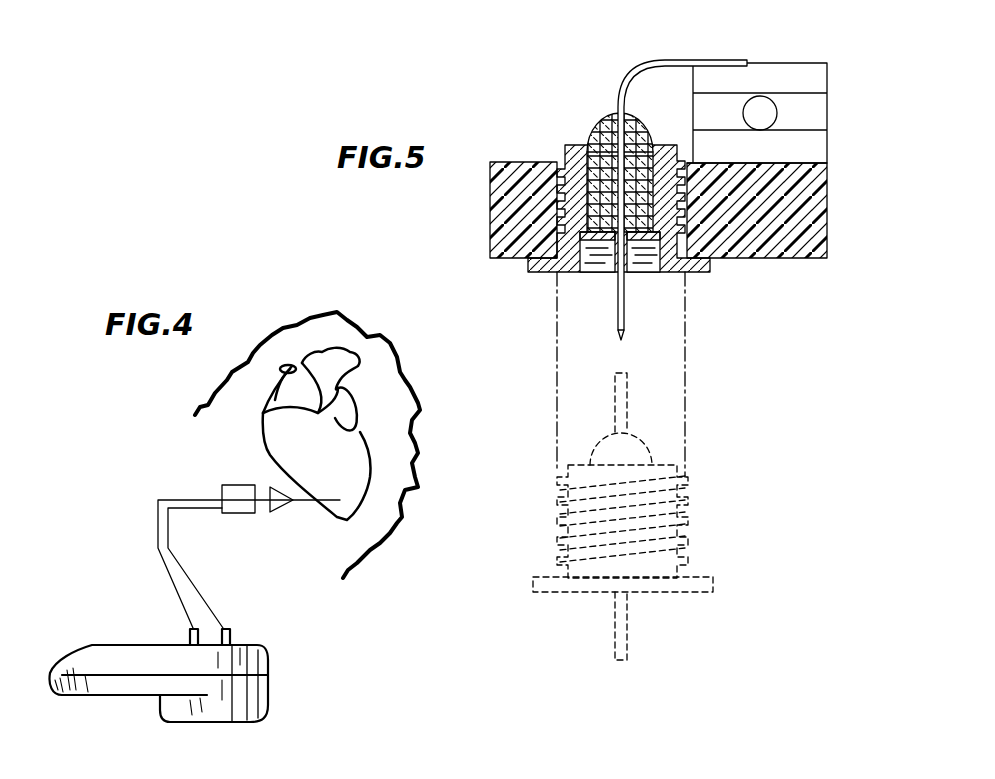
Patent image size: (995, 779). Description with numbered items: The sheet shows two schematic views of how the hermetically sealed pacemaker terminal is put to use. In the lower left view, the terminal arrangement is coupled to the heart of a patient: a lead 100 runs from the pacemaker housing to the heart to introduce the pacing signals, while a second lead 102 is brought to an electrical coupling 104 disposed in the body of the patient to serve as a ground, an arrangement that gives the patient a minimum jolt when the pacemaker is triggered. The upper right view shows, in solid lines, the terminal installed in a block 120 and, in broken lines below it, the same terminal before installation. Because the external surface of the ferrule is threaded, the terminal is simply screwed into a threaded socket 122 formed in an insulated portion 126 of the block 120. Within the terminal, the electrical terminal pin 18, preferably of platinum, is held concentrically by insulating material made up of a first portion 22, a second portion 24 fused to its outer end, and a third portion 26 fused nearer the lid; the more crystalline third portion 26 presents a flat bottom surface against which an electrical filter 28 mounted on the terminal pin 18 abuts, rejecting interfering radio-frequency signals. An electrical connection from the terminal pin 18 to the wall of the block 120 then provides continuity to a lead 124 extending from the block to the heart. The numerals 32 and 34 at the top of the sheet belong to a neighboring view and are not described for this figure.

In FIG. 5, the electrical terminal pin 18 is at (629, 286).
In FIG. 5, the first portion 22 is at (583, 163).
In FIG. 5, the second portion 24 is at (630, 130).
In FIG. 5, the third portion 26 is at (587, 213).
In FIG. 5, the electrical filter 28 is at (597, 262).
In FIG. 5, the element of preceding figure 32 is at (407, 24).
In FIG. 5, the element of preceding figure 34 is at (127, 7).
In FIG. 4, the lead 100 is at (200, 463).
In FIG. 4, the lead 102 is at (205, 512).
In FIG. 4, the electrical coupling 104 is at (252, 515).
In FIG. 5, the block 120 is at (786, 50).
In FIG. 5, the threaded socket 122 is at (680, 211).
In FIG. 5, the lead 124 is at (757, 115).
In FIG. 5, the insulated portion 126 is at (813, 210).